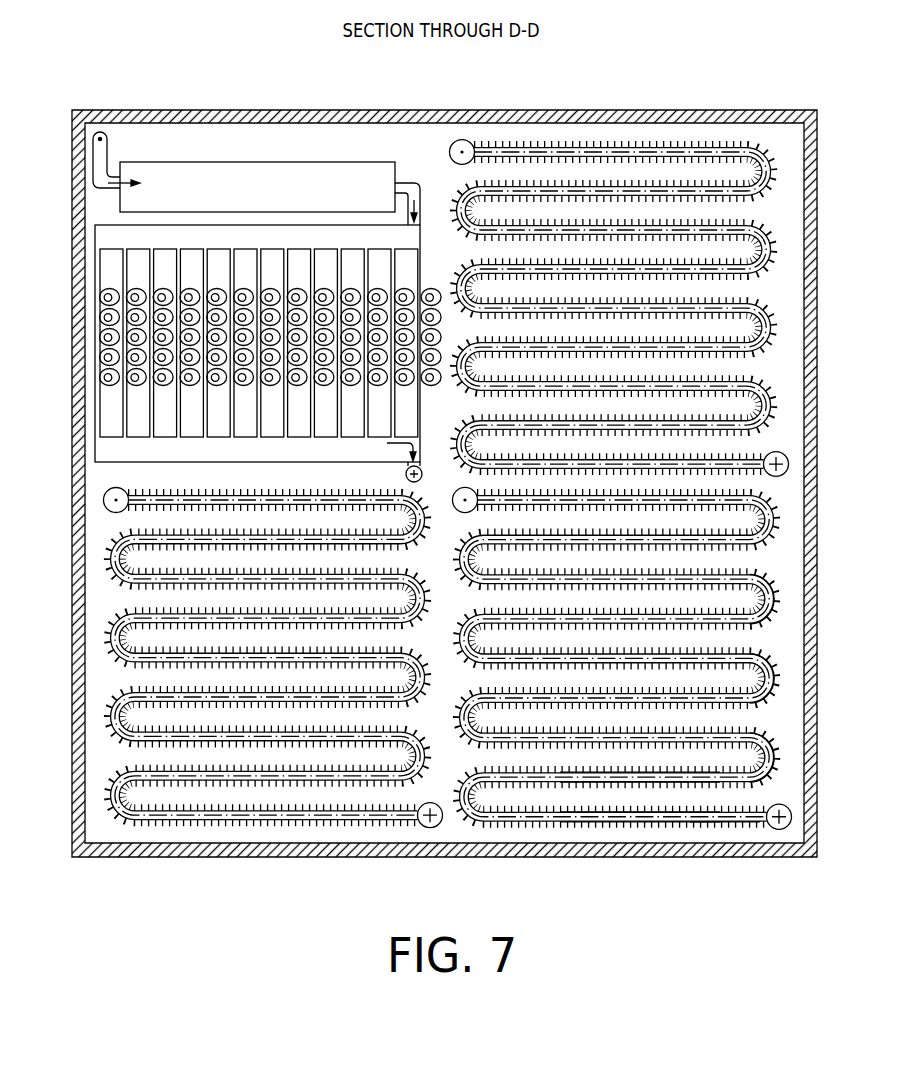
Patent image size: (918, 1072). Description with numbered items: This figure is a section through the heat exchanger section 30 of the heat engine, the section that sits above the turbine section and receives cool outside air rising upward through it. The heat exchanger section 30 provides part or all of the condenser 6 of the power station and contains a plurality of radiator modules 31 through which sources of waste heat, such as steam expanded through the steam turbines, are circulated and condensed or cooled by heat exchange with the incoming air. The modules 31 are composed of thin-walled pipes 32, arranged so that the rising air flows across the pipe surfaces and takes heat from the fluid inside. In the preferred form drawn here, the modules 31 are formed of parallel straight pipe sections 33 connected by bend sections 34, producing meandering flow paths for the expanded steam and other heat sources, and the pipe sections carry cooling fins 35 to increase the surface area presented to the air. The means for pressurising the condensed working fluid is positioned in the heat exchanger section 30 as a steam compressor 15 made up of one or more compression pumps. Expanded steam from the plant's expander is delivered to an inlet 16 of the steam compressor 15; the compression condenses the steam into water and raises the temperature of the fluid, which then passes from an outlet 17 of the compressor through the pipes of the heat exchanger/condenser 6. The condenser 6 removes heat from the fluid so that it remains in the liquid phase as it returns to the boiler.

The heat exchanger section 30 is at (202, 863).
The steam compressor 15 is at (288, 161).
The inlet 16 is at (96, 139).
The outlet 17 is at (421, 190).
The condenser 6 is at (98, 330).
The radiator modules 31 is at (105, 662).
The thin-walled pipes 32 is at (729, 838).
The parallel straight pipe sections 33 is at (603, 822).
The bend sections 34 is at (780, 602).
The cooling fins 35 is at (780, 763).